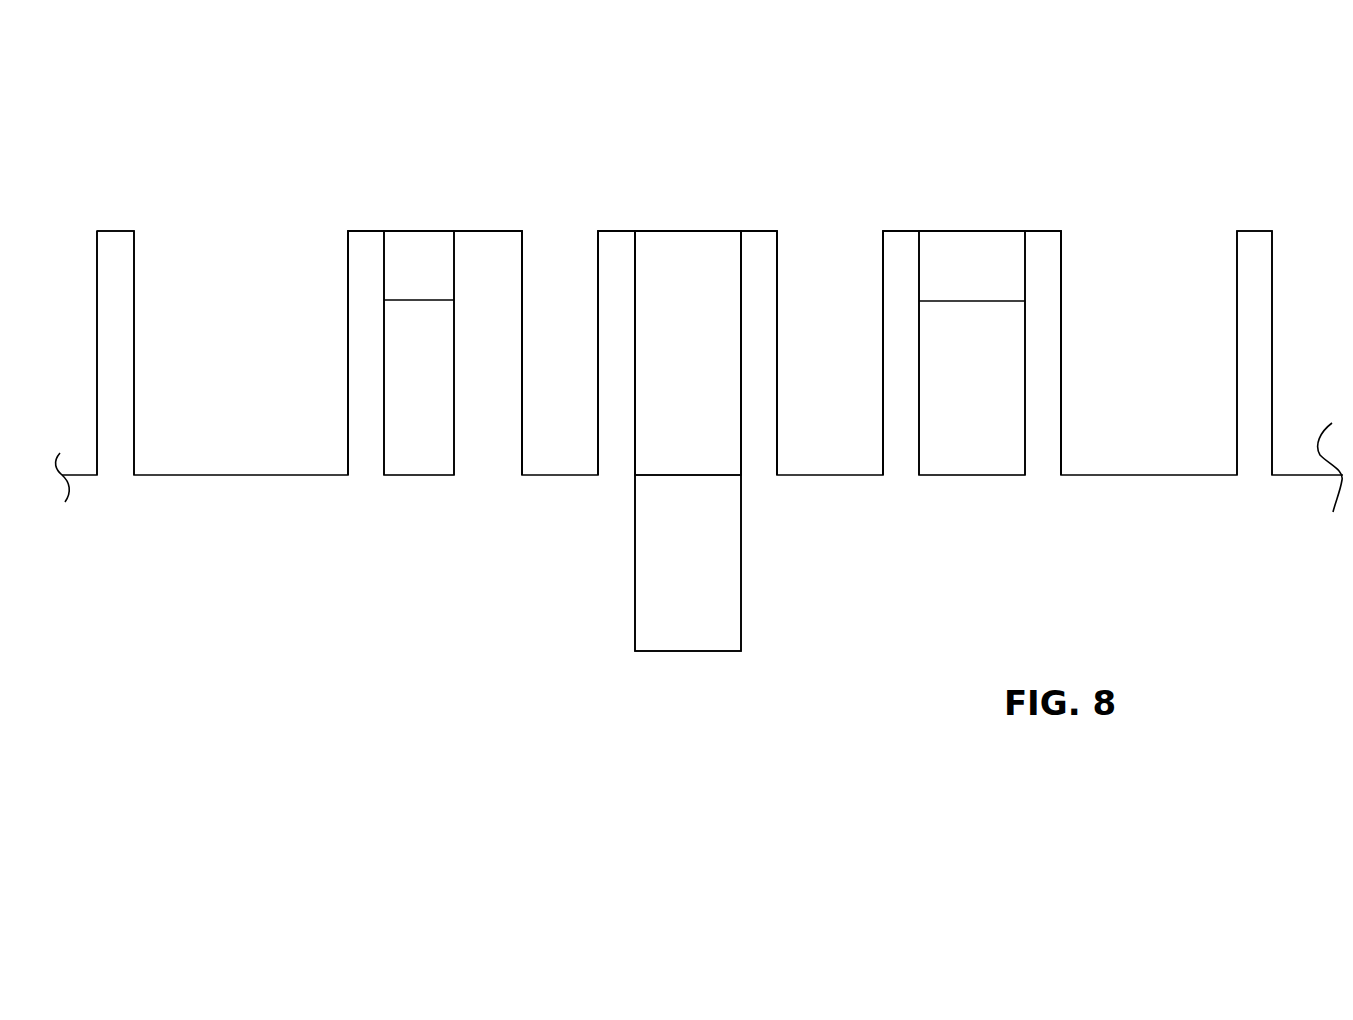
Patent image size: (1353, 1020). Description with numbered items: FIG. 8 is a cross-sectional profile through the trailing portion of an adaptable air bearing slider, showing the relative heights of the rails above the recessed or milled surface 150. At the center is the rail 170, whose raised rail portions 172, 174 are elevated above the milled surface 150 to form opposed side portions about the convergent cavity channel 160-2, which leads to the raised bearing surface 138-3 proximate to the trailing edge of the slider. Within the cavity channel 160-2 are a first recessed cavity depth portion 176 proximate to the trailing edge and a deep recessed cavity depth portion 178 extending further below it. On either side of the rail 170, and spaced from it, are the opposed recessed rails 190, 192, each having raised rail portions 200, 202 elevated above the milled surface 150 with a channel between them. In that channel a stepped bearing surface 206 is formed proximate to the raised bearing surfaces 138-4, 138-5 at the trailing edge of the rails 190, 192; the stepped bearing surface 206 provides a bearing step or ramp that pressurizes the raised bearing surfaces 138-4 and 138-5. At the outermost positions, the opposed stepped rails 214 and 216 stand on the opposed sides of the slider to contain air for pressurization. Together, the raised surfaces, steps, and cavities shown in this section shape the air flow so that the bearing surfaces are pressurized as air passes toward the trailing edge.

The recessed or milled surface 150 is at (205, 475).
The stepped rail 214 is at (112, 231).
The stepped rail 216 is at (1262, 231).
The recessed rail 190 is at (368, 188).
The recessed rail 192 is at (945, 162).
The rail 170 is at (695, 139).
The raised rail portion 172 is at (602, 231).
The raised rail portion 174 is at (760, 231).
The first recessed cavity depth portion 176 is at (672, 475).
The deep recessed cavity depth portion 178 is at (683, 651).
The raised rail portion 200 is at (352, 231).
The raised rail portion 202 is at (475, 231).
The stepped bearing surface 206 is at (405, 300).
The raised bearing surface 138-3 is at (680, 231).
The raised bearing surface 138-4 is at (413, 231).
The raised bearing surface 138-5 is at (965, 231).
The convergent cavity channel 160-2 is at (692, 327).